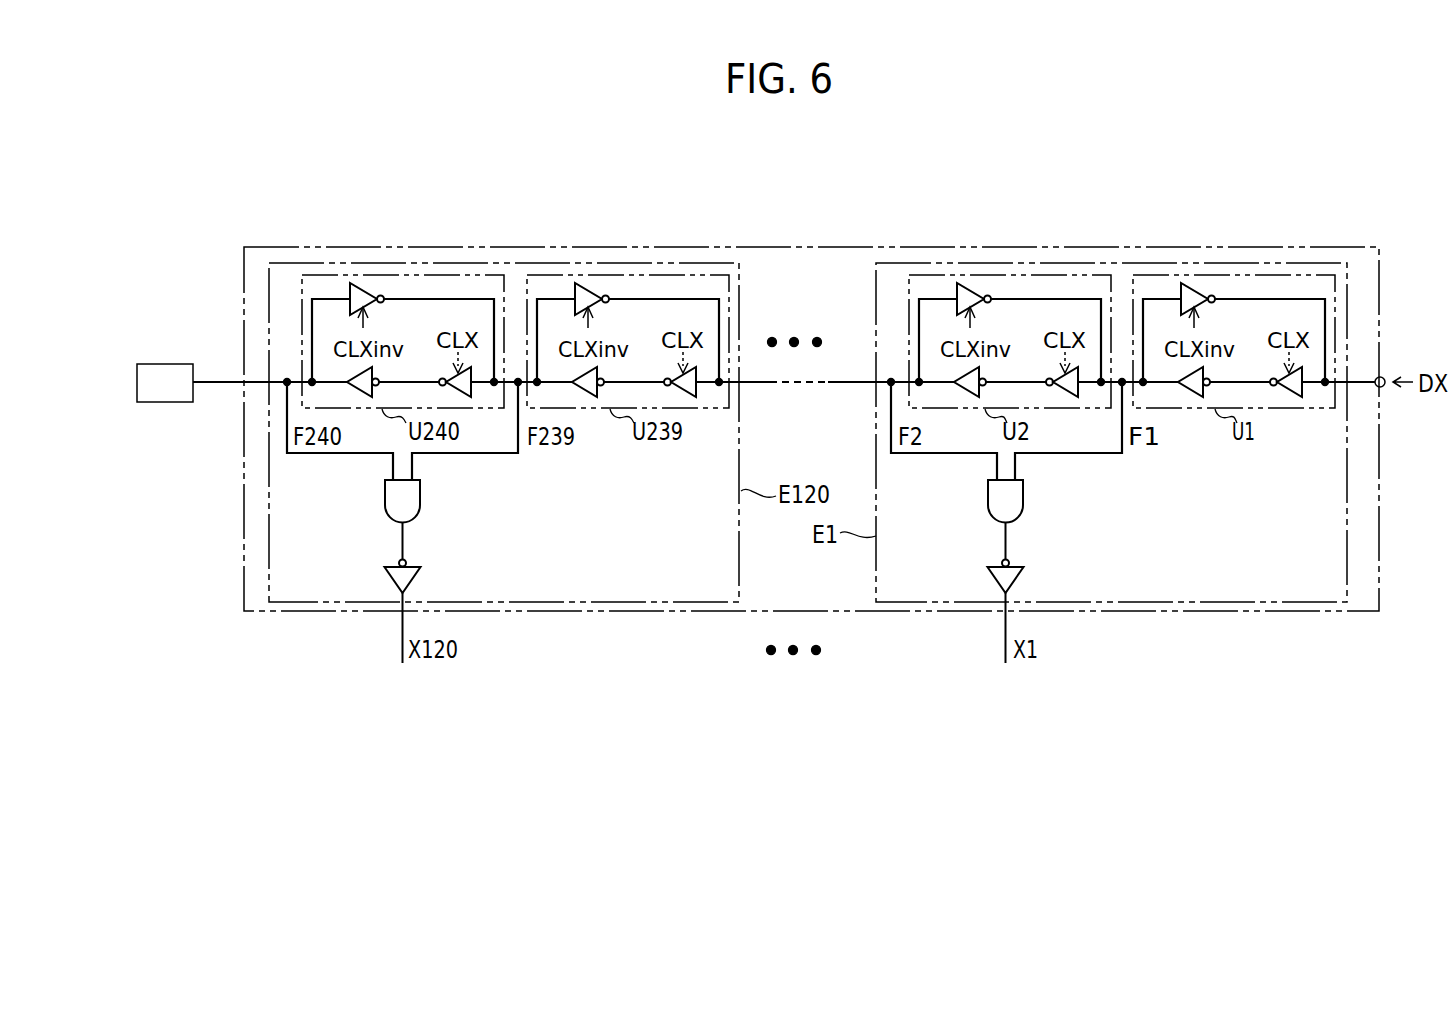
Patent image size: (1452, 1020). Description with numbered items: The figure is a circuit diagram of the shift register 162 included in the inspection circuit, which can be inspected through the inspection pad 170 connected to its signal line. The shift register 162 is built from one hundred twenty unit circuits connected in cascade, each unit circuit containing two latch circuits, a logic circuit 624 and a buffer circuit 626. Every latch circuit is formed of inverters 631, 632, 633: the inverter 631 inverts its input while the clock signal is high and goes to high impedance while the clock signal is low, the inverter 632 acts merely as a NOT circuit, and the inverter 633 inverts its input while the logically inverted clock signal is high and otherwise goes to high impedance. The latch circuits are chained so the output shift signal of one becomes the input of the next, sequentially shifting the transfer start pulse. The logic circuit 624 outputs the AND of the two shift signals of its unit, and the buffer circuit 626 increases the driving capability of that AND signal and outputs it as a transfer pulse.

The shift register 162 is at (801, 246).
The inspection PAD 170 is at (159, 362).
The logic circuit 624 is at (421, 494).
The buffer circuit 626 is at (422, 566).
The inverter 631 is at (1293, 400).
The inverter 632 is at (1184, 400).
The inverter 633 is at (1200, 306).